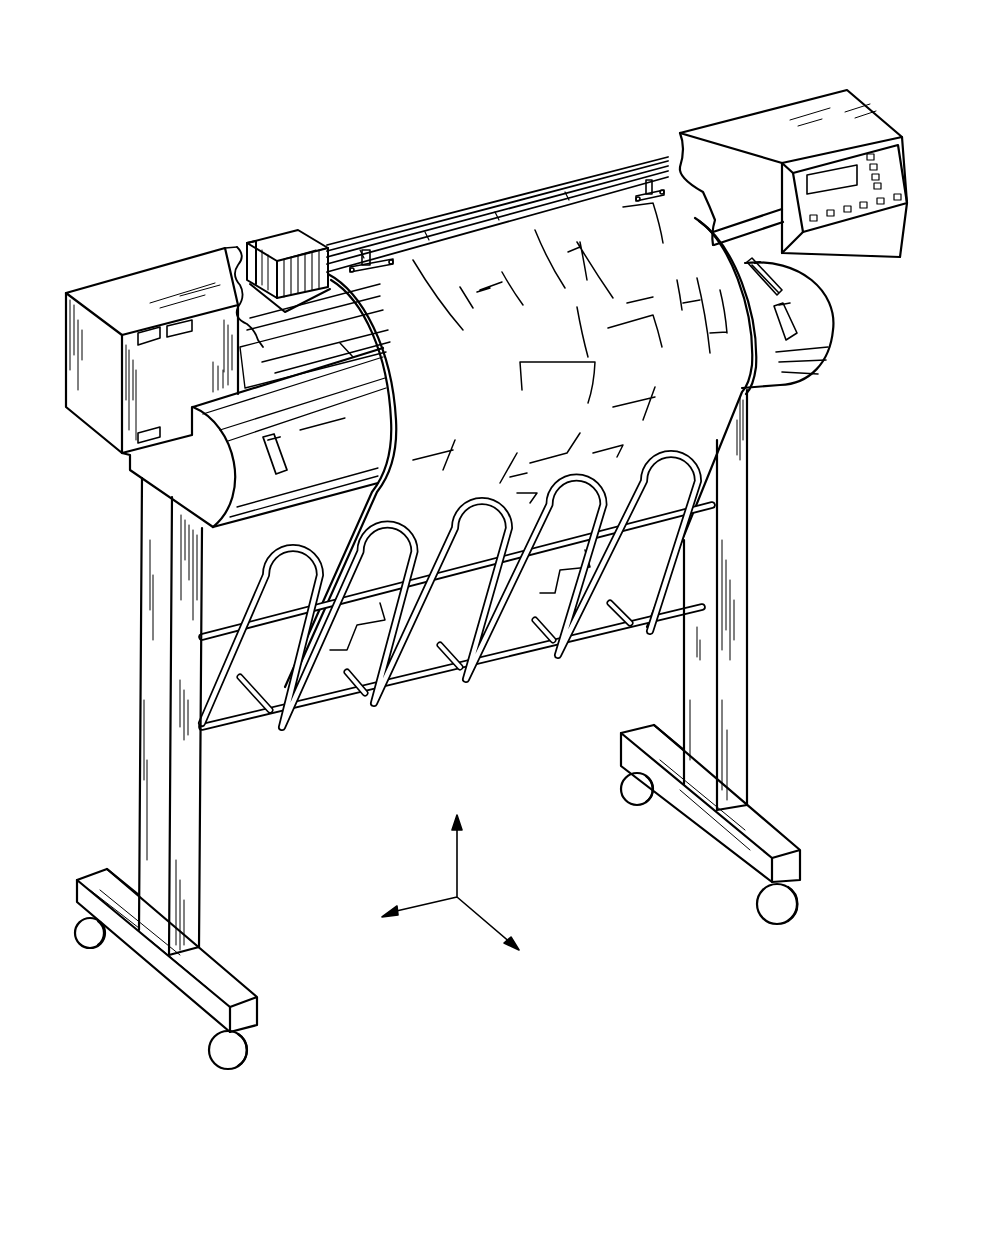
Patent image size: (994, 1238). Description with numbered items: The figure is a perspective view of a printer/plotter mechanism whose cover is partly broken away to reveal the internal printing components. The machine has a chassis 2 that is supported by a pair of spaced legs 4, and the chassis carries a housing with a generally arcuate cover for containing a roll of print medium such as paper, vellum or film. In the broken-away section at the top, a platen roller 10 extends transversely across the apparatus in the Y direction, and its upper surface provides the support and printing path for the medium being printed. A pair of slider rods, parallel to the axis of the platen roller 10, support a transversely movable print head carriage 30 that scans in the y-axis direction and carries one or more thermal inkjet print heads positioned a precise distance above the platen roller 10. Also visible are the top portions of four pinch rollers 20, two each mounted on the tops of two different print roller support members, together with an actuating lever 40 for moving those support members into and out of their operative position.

The chassis 2 is at (186, 57).
The legs 4 is at (150, 525).
The platen roller 10 is at (323, 322).
The pinch rollers 20 is at (383, 250).
The print head carriage 30 is at (257, 224).
The actuating lever 40 is at (797, 267).